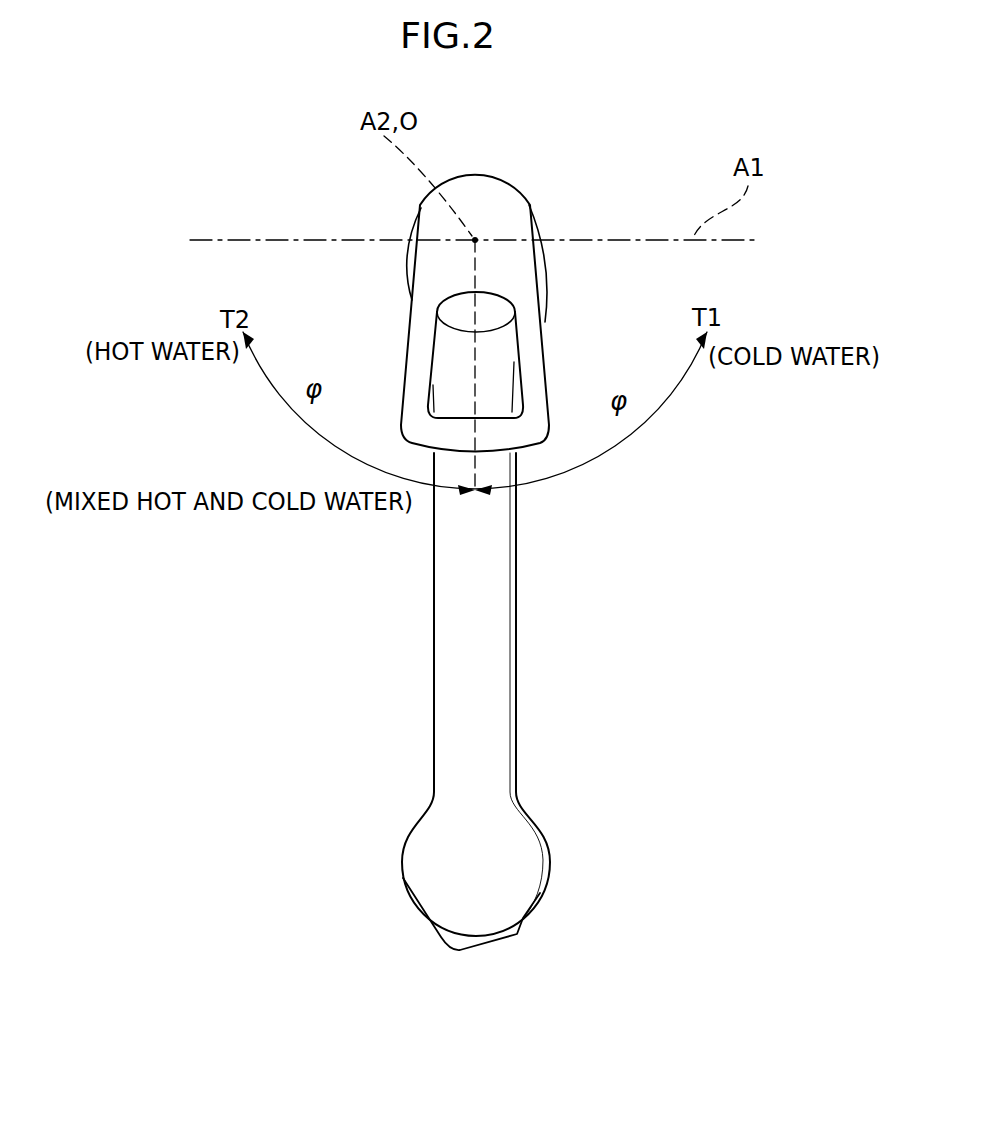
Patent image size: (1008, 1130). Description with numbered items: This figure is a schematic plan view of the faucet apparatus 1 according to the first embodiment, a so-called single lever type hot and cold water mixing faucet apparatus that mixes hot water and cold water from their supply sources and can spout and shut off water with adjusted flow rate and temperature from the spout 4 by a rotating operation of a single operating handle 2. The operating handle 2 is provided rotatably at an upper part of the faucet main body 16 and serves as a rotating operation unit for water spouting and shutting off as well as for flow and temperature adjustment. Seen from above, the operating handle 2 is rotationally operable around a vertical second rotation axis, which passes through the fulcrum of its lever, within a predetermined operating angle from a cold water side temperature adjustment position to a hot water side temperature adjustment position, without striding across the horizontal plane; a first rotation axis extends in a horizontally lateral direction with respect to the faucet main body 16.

The faucet apparatus 1 is at (578, 128).
The operating handle 2 is at (546, 314).
The spout 4 is at (493, 672).
The faucet main body 16 is at (406, 273).